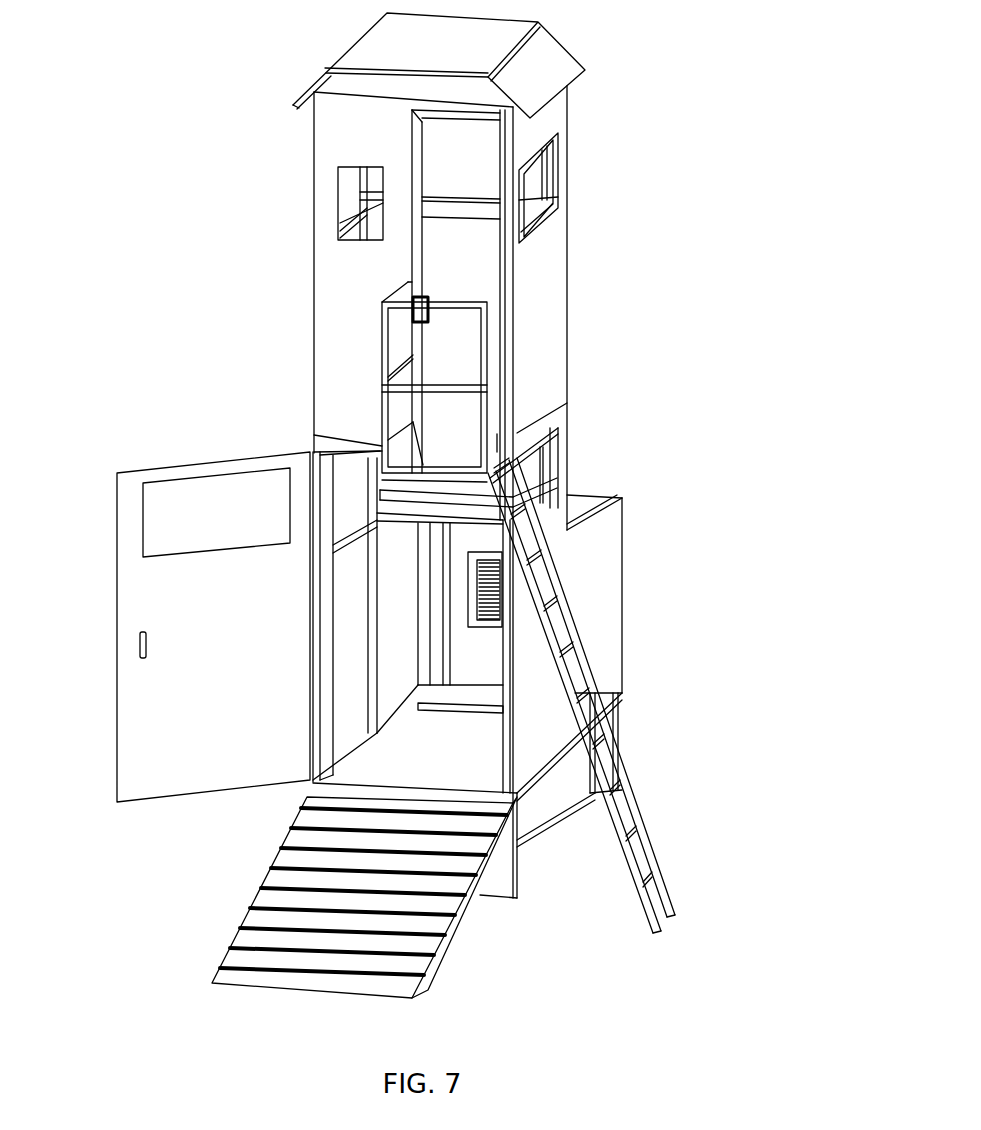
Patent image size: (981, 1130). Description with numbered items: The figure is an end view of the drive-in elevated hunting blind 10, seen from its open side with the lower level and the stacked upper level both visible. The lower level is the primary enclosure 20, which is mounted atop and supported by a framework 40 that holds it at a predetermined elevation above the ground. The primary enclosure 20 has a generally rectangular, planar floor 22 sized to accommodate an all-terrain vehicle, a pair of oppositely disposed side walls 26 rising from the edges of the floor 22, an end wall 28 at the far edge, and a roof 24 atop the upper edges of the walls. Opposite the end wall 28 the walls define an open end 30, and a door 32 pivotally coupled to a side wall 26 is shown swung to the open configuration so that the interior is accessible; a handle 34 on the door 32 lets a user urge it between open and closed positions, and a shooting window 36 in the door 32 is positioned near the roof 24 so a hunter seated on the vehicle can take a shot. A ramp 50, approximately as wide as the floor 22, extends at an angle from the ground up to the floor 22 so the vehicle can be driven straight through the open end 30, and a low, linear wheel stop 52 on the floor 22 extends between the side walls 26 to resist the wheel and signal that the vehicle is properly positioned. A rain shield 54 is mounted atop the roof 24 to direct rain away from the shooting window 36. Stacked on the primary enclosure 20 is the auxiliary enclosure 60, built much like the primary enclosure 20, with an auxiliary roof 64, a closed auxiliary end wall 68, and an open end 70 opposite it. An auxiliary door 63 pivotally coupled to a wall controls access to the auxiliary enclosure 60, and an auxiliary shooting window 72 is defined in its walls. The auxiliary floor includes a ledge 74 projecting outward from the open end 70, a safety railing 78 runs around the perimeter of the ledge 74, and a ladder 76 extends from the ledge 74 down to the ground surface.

The hunting blind 10 is at (387, 502).
The primary enclosure 20 is at (648, 551).
The floor 22 is at (382, 771).
The roof 24 is at (618, 490).
The side walls 26 is at (615, 620).
The end wall 28 is at (456, 669).
The open end 30 is at (297, 802).
The door 32 is at (127, 731).
The handle 34 is at (140, 643).
The shooting window 36 is at (143, 511).
The framework 40 is at (553, 836).
The ramp 50 is at (443, 933).
The wheel stop 52 is at (462, 713).
The rain shield 54 is at (471, 65).
The auxiliary enclosure 60 is at (606, 141).
The auxiliary door 63 is at (410, 268).
The auxiliary roof 64 is at (282, 77).
The auxiliary end wall 68 is at (441, 267).
The open end 70 is at (500, 293).
The auxiliary shooting window 72 is at (579, 191).
The ledge 74 is at (559, 434).
The ladder 76 is at (658, 853).
The safety railing 78 is at (381, 358).